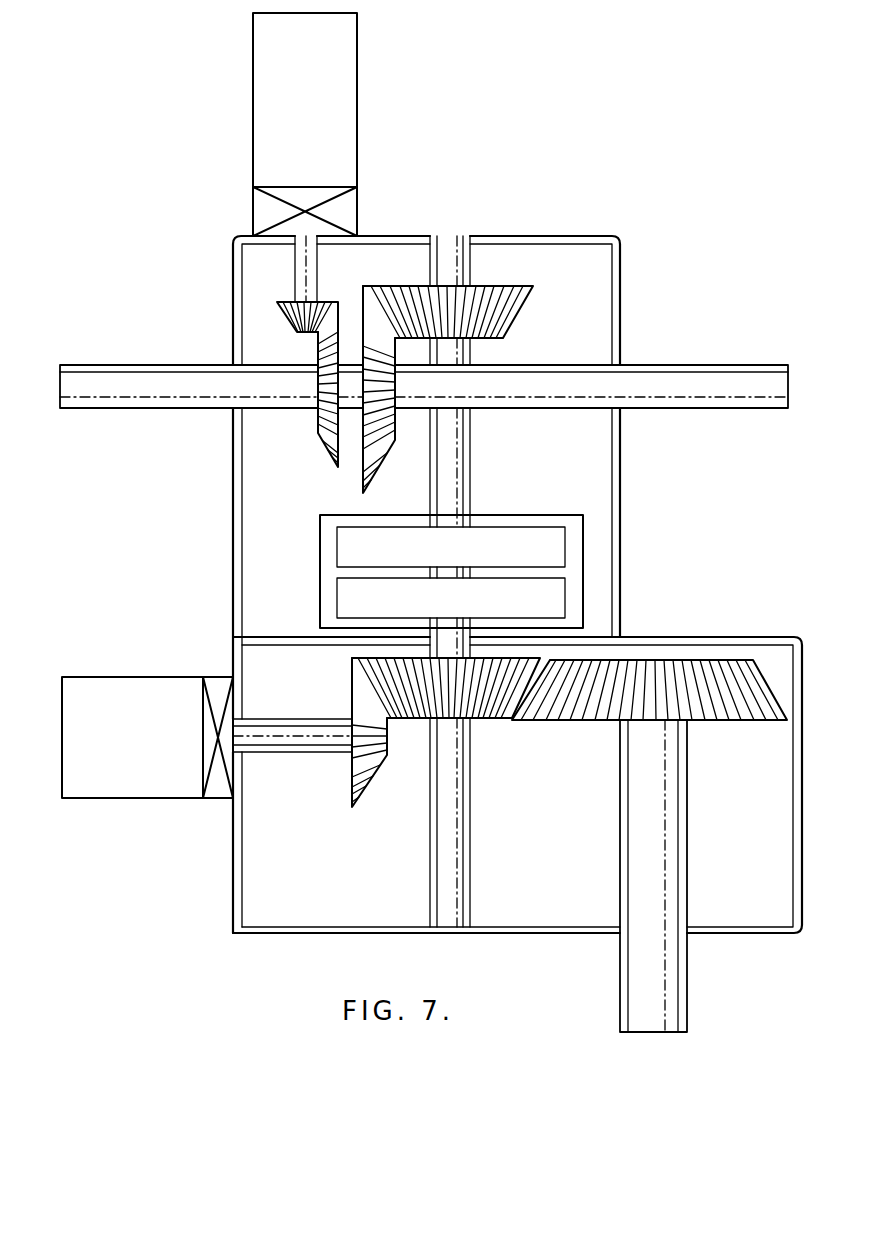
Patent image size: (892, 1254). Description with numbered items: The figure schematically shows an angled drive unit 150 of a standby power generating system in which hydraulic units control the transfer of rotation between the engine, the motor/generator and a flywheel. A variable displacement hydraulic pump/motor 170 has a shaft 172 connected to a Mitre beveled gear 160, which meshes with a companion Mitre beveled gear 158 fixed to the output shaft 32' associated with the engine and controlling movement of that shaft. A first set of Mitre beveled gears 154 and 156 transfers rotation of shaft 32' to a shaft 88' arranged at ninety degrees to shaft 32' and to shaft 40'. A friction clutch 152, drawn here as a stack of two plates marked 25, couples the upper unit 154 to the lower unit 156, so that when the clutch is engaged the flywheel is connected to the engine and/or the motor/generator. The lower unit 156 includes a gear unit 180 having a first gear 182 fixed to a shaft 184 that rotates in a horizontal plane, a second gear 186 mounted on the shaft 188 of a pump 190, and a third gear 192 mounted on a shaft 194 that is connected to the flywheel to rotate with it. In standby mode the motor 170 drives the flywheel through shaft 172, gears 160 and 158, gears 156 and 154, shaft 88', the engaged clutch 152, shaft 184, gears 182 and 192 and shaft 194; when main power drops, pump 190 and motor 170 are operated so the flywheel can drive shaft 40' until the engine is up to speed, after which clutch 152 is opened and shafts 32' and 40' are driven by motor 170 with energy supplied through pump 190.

The angled drive unit 150 is at (648, 229).
The variable displacement hydraulic pump/motor 170 is at (338, 103).
The shaft 172 is at (317, 273).
The Mitre beveled gear 160 is at (283, 316).
The Mitre beveled gear 158 is at (312, 425).
The upper unit / Mitre beveled gear 154 is at (500, 326).
The lower unit / Mitre beveled gear 156 is at (372, 455).
The shaft 88' is at (493, 447).
The output shaft 32' is at (211, 410).
The shaft 40' is at (616, 418).
The friction clutch 152 is at (541, 568).
The battery 25 is at (457, 557).
The pump 190 is at (132, 700).
The shaft 188 is at (327, 755).
The second gear 186 is at (350, 772).
The first gear 182 is at (411, 722).
The gear unit 180 is at (386, 784).
The shaft 184 is at (458, 860).
The third gear 192 is at (735, 707).
The shaft 194 is at (667, 885).